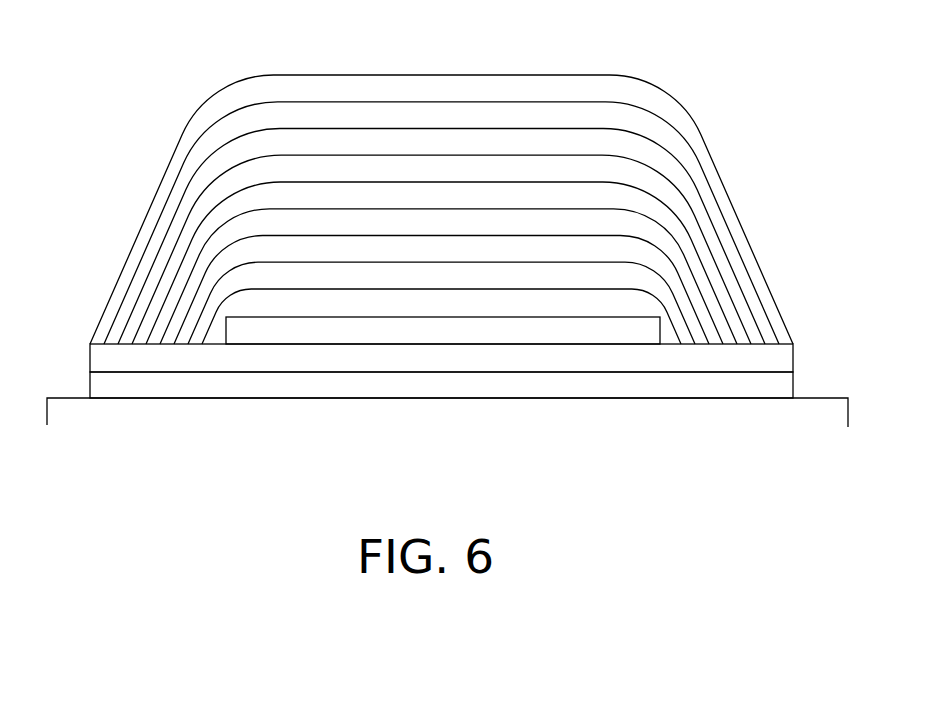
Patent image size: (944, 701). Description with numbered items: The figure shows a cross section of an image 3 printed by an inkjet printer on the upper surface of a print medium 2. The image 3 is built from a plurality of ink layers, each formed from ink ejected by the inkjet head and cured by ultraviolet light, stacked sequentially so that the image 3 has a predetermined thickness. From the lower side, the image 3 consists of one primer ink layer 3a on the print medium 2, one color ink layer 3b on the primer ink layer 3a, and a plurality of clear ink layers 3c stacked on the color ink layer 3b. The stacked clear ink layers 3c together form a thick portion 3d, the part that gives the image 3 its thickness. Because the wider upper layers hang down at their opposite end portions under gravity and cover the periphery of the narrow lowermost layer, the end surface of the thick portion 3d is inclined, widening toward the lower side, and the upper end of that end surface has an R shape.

The print medium 2 is at (68, 397).
The image 3 is at (468, 242).
The primer ink layer 3a is at (795, 388).
The color ink layer 3b is at (795, 358).
The clear ink layer 3c is at (403, 128).
The thick portion 3d is at (738, 218).